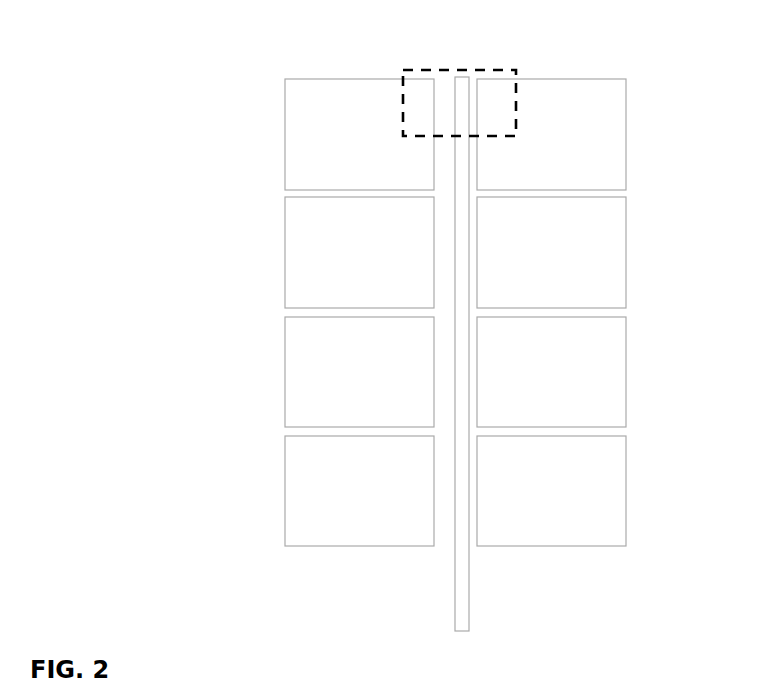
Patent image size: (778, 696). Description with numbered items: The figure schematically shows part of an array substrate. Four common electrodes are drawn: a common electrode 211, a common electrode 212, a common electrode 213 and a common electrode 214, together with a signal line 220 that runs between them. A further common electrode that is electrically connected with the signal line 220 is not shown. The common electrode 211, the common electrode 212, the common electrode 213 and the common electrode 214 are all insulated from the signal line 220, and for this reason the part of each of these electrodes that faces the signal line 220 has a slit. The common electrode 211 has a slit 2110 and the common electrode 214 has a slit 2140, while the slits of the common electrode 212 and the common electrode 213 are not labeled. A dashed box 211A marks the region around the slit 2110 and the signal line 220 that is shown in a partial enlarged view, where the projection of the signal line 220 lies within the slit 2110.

The common electrode 211 is at (314, 131).
The common electrode 212 is at (314, 270).
The common electrode 213 is at (314, 382).
The common electrode 214 is at (313, 492).
The signal line 220 is at (462, 614).
The dashed box 211A is at (516, 70).
The slit 2110 is at (445, 100).
The slit 2140 is at (447, 535).